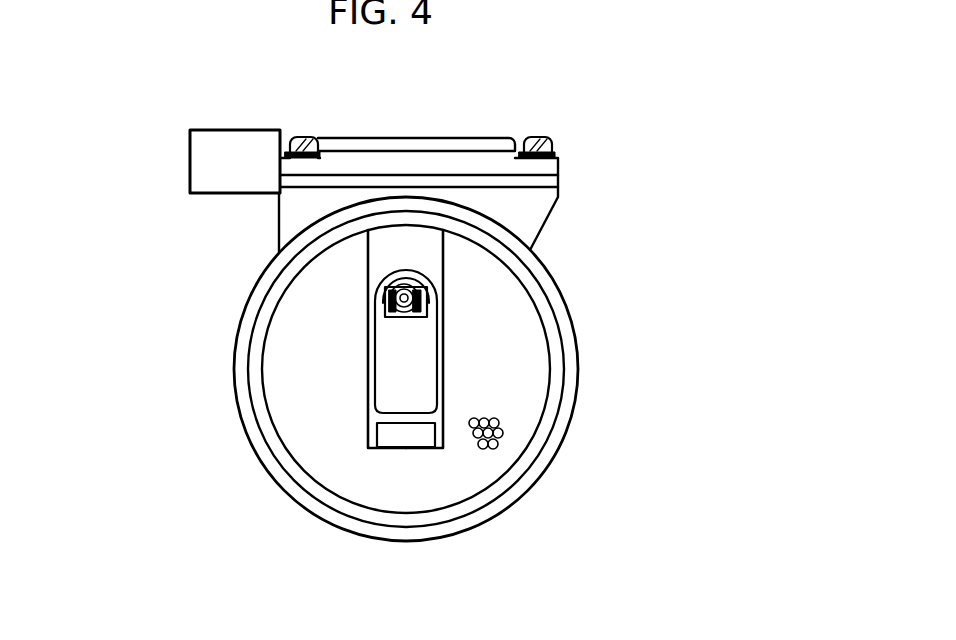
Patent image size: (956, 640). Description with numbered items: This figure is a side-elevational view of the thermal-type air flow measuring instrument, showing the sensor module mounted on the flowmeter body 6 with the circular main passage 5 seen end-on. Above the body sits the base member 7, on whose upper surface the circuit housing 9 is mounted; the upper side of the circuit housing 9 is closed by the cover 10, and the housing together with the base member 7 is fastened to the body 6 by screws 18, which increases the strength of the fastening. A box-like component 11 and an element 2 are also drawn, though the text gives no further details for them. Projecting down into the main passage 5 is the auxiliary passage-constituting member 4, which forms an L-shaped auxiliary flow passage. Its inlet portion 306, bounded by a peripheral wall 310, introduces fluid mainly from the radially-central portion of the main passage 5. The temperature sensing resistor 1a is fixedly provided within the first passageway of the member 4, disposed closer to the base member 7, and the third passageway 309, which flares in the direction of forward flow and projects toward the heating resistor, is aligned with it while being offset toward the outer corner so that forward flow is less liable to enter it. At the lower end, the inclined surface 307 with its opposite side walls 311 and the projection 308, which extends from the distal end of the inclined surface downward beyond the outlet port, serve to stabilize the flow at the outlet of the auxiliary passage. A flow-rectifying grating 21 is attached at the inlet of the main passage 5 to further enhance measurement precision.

The temperature sensing resistor 1a is at (418, 280).
The bearing 2 is at (405, 316).
The auxiliary passage-constituting member 4 is at (442, 368).
The main passage 5 is at (535, 380).
The flowmeter body 6 is at (570, 432).
The base member 7 is at (552, 182).
The circuit housing 9 is at (552, 168).
The cover 10 is at (398, 143).
The control box 11 is at (190, 164).
The screws 18 is at (308, 137).
The flow-rectifying grating 21 is at (500, 447).
The inlet portion 306 is at (392, 389).
The inclined surface 307 is at (392, 438).
The projection 308 is at (420, 450).
The third passageway 309 is at (393, 285).
The peripheral wall 310 is at (375, 353).
The side walls 311 is at (390, 437).